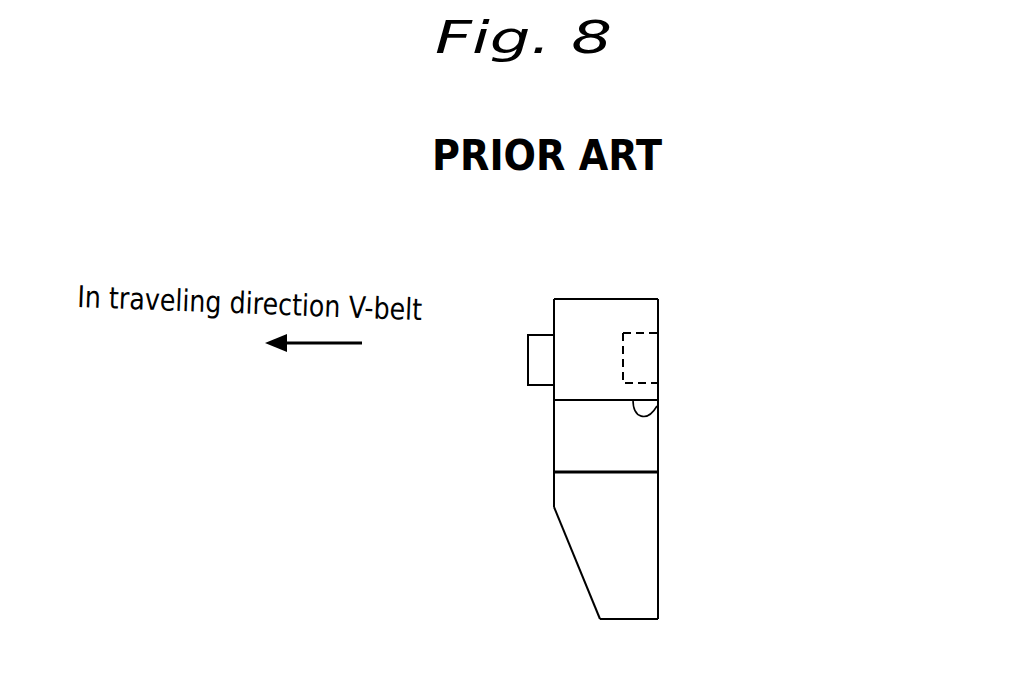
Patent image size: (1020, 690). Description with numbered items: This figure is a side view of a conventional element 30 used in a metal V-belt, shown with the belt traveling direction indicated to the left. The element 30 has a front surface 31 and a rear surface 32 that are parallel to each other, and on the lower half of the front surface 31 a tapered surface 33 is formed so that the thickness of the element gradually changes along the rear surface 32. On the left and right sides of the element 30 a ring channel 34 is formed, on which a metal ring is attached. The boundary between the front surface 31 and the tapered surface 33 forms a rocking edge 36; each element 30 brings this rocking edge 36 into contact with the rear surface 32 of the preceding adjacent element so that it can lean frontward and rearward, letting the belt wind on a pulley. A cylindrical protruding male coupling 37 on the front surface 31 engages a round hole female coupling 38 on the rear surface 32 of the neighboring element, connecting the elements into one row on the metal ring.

The element 30 is at (631, 292).
The front surface 31 is at (554, 320).
The rear surface 32 is at (693, 445).
The tapered surface 33 is at (582, 572).
The ring channel 34 is at (649, 420).
The rocking edge 36 is at (554, 507).
The male coupling 37 is at (528, 358).
The female coupling 38 is at (630, 333).